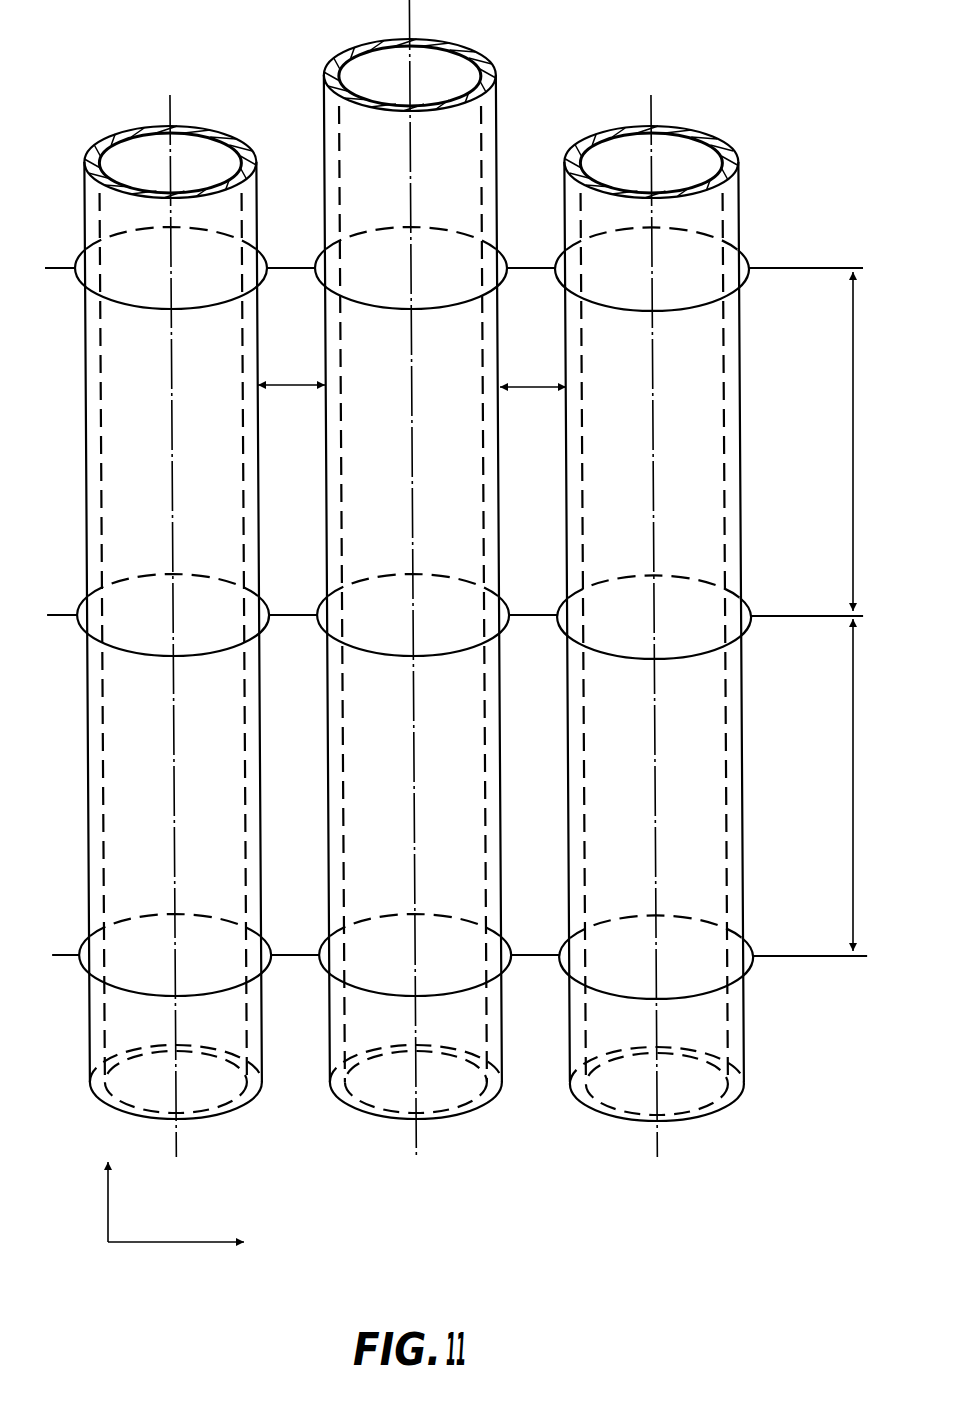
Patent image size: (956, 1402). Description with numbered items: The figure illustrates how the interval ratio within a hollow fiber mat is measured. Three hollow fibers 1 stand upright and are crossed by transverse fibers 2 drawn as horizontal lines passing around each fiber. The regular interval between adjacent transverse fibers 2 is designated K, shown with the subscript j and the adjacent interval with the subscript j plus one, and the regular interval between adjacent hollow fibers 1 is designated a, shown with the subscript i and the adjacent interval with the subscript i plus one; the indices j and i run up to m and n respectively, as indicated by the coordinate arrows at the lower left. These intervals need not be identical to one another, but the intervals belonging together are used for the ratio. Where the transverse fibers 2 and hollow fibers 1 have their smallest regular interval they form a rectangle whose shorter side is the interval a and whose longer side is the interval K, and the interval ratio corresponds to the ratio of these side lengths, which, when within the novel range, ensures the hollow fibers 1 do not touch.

The hollow fibers 1 is at (495, 130).
The transverse fibers 2 is at (782, 265).
The regular interval between adjacent transverse fibers K is at (831, 611).
The regular interval between adjacent hollow fibers a is at (412, 368).
The hollow fiber interval index i is at (231, 1242).
The transverse fiber interval index j is at (100, 1183).